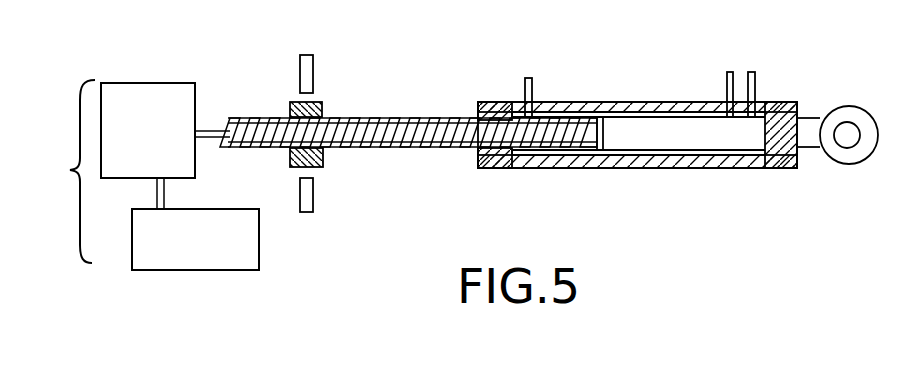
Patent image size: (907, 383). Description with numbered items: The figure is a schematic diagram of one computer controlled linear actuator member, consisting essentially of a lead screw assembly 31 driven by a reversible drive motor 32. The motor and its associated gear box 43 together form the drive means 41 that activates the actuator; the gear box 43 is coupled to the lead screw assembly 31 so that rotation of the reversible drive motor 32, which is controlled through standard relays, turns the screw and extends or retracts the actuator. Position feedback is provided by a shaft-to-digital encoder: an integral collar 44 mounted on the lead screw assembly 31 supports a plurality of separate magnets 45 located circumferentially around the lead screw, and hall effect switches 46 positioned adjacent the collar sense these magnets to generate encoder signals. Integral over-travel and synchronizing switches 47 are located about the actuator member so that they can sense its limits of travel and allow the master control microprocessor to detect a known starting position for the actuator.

The lead screw assembly 31 is at (437, 147).
The reversible drive motor 32 is at (208, 270).
The drive means 41 is at (63, 171).
The gear box 43 is at (148, 83).
The collar 44 is at (322, 163).
The magnets 45 is at (322, 112).
The hall effect switches 46 is at (313, 68).
The over-travel and synchronizing switches 47 is at (532, 85).